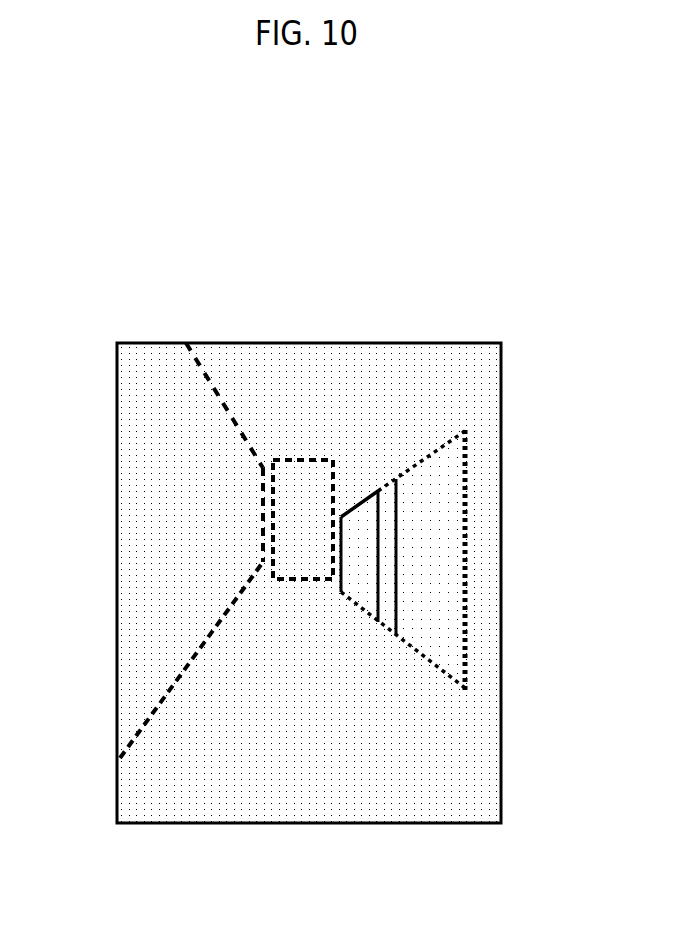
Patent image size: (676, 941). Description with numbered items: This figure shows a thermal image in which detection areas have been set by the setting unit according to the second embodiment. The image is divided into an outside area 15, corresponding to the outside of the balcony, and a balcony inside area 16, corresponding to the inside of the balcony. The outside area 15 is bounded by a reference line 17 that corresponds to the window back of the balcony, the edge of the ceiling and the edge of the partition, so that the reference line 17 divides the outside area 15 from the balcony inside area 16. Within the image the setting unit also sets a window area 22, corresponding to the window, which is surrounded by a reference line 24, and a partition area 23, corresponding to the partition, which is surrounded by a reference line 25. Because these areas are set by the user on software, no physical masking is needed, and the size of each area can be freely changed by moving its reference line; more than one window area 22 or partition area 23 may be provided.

The outside area 15 is at (165, 547).
The balcony inside area 16 is at (470, 768).
The reference line 17 is at (177, 673).
The window area 22 is at (438, 536).
The partition area 23 is at (305, 480).
The reference line 24 is at (462, 617).
The reference line 25 is at (281, 459).